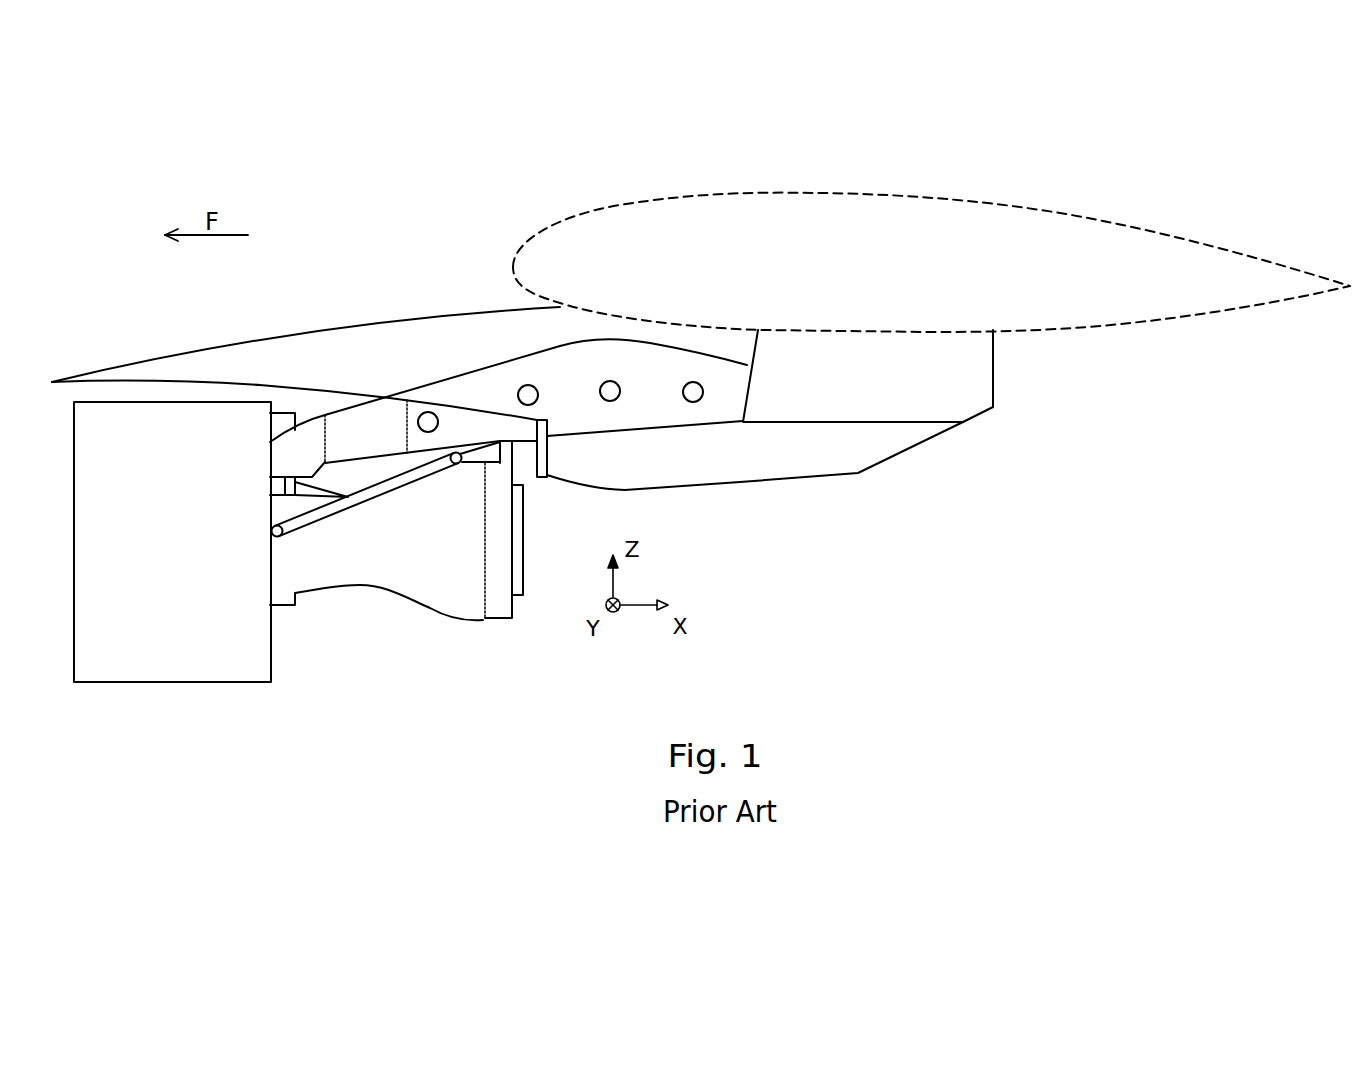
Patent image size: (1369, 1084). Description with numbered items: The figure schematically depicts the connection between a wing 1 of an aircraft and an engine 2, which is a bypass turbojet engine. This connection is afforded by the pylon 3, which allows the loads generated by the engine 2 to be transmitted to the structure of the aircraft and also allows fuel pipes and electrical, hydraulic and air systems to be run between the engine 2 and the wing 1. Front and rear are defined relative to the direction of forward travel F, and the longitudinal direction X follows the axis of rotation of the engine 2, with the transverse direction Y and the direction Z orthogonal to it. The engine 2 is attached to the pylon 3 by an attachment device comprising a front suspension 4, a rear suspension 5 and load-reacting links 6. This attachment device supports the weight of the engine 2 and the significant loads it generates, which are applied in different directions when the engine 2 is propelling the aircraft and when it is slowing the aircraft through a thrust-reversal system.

The wing 1 is at (983, 293).
The engine 2 is at (220, 563).
The pylon 3 is at (745, 472).
The front suspension 4 is at (283, 483).
The rear suspension 5 is at (508, 452).
The load-reacting links 6 is at (403, 478).